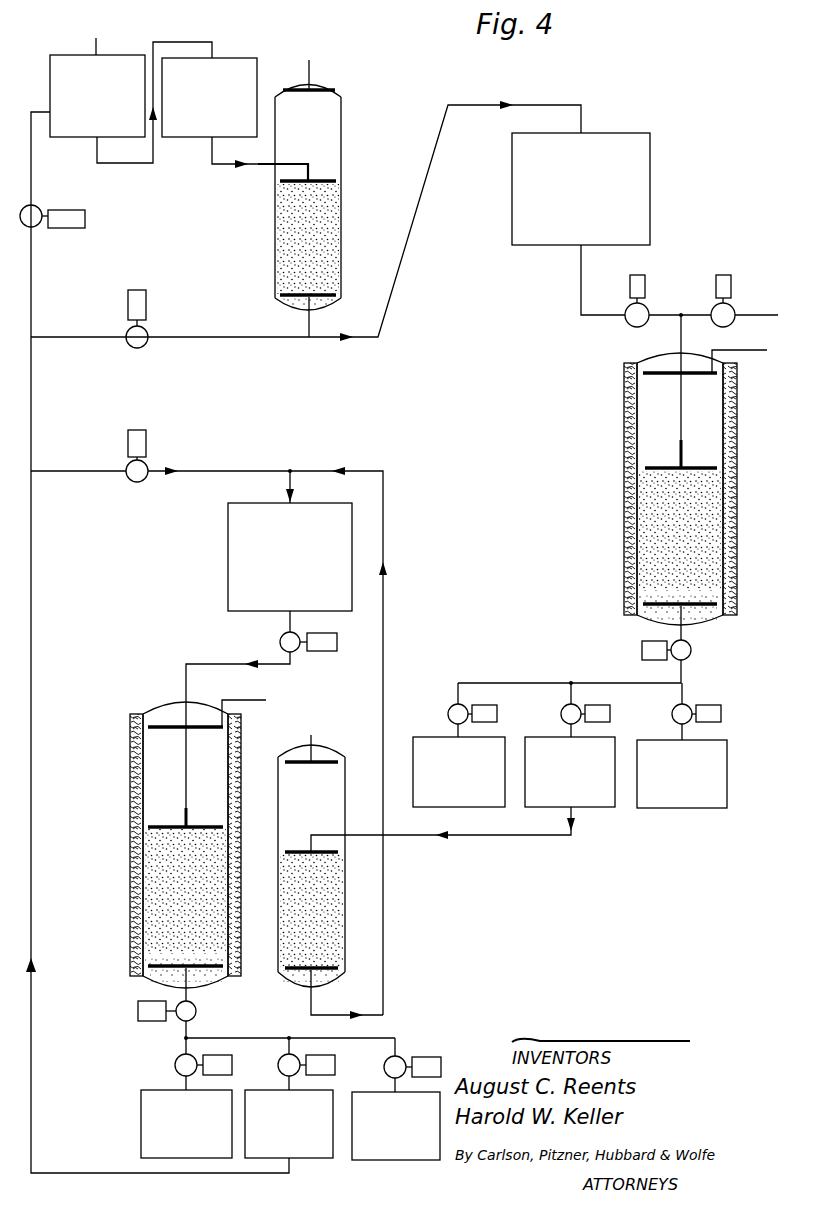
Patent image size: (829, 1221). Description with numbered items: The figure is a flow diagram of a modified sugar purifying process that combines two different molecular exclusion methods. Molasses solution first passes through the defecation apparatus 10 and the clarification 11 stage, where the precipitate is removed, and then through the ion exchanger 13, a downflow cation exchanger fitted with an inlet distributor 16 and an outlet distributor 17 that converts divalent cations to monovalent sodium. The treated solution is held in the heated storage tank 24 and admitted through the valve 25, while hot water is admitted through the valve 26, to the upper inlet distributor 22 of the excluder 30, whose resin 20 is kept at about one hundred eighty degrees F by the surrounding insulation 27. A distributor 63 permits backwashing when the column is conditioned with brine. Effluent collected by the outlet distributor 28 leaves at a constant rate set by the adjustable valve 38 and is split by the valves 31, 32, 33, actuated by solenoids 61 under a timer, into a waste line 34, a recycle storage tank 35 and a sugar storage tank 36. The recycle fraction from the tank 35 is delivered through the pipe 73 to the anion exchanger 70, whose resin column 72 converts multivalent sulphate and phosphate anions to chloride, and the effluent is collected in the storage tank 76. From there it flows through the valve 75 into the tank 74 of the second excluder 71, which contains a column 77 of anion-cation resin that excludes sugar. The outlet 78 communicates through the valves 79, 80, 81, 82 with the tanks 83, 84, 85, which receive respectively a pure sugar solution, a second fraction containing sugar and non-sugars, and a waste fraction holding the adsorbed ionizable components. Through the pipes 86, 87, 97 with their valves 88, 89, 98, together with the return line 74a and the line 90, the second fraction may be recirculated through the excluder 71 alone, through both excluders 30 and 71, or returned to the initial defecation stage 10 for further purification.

The defecation apparatus 10 is at (66, 131).
The clarification 11 is at (197, 137).
The ion exchanger 13 is at (277, 263).
The inlet distributor 16 is at (330, 180).
The outlet distributor 17 is at (287, 310).
The resin 20 is at (647, 545).
The upper inlet distributor 22 is at (697, 467).
The storage tank 24 is at (650, 205).
The valve 25 is at (630, 325).
The valve 26 is at (733, 325).
The insulation 27 is at (737, 533).
The outlet distributor 28 is at (653, 610).
The excluder 30 is at (744, 471).
The valve 31 is at (450, 707).
The valve 32 is at (562, 708).
The valve 33 is at (673, 709).
The waste line 34 is at (427, 737).
The storage tank 35 is at (602, 806).
The storage tank 36 is at (724, 795).
The adjustable valve 38 is at (693, 652).
The solenoids 61 is at (645, 288).
The distributor 63 is at (645, 377).
The anion exchanger 70 is at (348, 915).
The excluder 71 is at (126, 767).
The column 72 is at (334, 886).
The pipe 73 is at (488, 838).
The tank 74 is at (143, 819).
The return line 74a is at (386, 640).
The valve 75 is at (280, 641).
The storage tank 76 is at (255, 506).
The column 77 is at (152, 877).
The outlet 78 is at (148, 967).
The valve 79 is at (197, 1010).
The valve 80 is at (176, 1066).
The valve 81 is at (279, 1066).
The valve 82 is at (402, 1057).
The tank 83 is at (147, 1127).
The tank 84 is at (308, 1155).
The tank 85 is at (383, 1157).
The pipe 86 is at (209, 731).
The pipe 87 is at (192, 343).
The valve 88 is at (142, 346).
The valve 89 is at (128, 465).
The recycle return line 90 is at (36, 1092).
The pipe 97 is at (33, 280).
The valve 98 is at (36, 208).